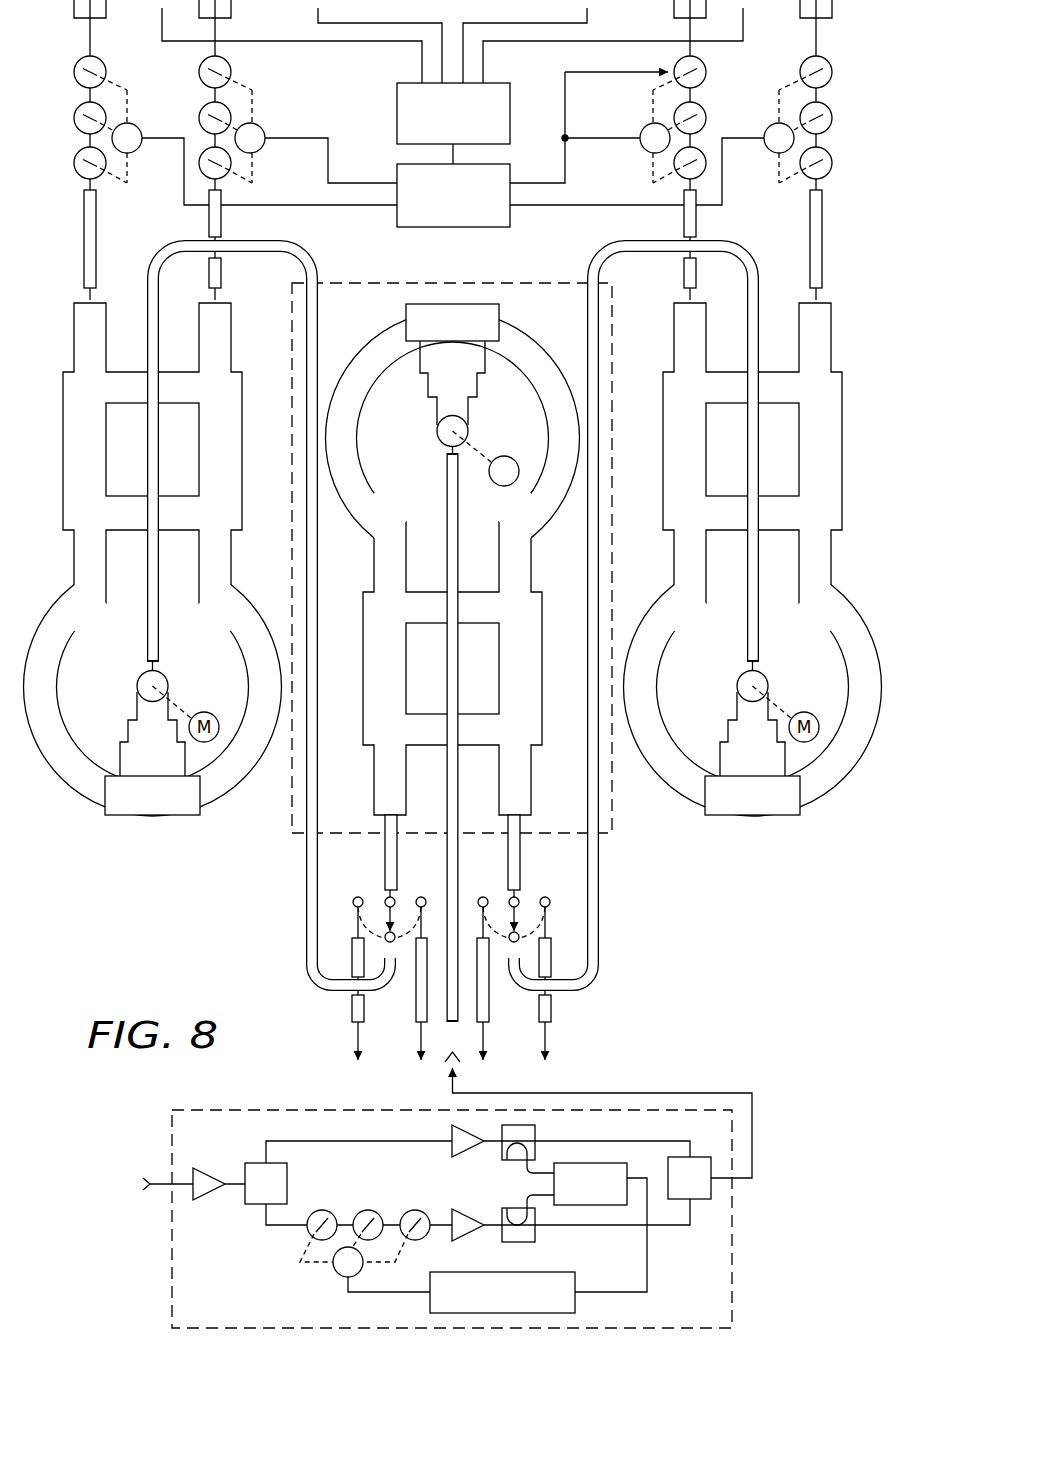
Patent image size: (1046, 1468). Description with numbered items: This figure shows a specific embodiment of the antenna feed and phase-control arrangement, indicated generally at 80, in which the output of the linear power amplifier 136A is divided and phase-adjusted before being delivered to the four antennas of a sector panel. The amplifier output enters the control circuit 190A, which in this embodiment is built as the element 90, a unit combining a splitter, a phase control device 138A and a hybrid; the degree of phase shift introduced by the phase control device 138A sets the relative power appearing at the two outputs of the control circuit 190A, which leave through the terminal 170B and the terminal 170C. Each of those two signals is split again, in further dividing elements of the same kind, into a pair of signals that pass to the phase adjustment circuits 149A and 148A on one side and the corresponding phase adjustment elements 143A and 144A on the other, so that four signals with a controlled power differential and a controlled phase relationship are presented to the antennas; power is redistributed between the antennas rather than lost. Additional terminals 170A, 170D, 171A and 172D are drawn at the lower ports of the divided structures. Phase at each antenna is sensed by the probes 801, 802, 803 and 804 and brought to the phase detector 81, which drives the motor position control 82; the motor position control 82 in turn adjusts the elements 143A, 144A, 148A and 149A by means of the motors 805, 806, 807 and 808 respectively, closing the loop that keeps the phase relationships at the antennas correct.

The tuning system 80 is at (777, 945).
The phase detector 81 is at (397, 112).
The motor position control 82 is at (452, 228).
The element 90 is at (72, 448).
The LPA 136A is at (261, 1290).
The phase control device 138A is at (437, 406).
The phase adjustment element 143A is at (855, 215).
The phase adjustment element 144A is at (670, 104).
The phase adjustment circuit 148A is at (235, 104).
The phase adjustment circuit 149A is at (110, 104).
The terminal 170A is at (483, 897).
The terminal 170B is at (394, 942).
The terminal 170C is at (510, 942).
The terminal 170D is at (421, 897).
The terminal 171A is at (546, 897).
The terminal 172D is at (357, 897).
The control circuit 190A is at (540, 283).
The probe 801 is at (162, 28).
The probe 802 is at (318, 13).
The probe 803 is at (587, 13).
The probe 804 is at (743, 28).
The motor 805 is at (775, 152).
The motor 806 is at (648, 152).
The motor 807 is at (256, 154).
The motor 808 is at (134, 154).